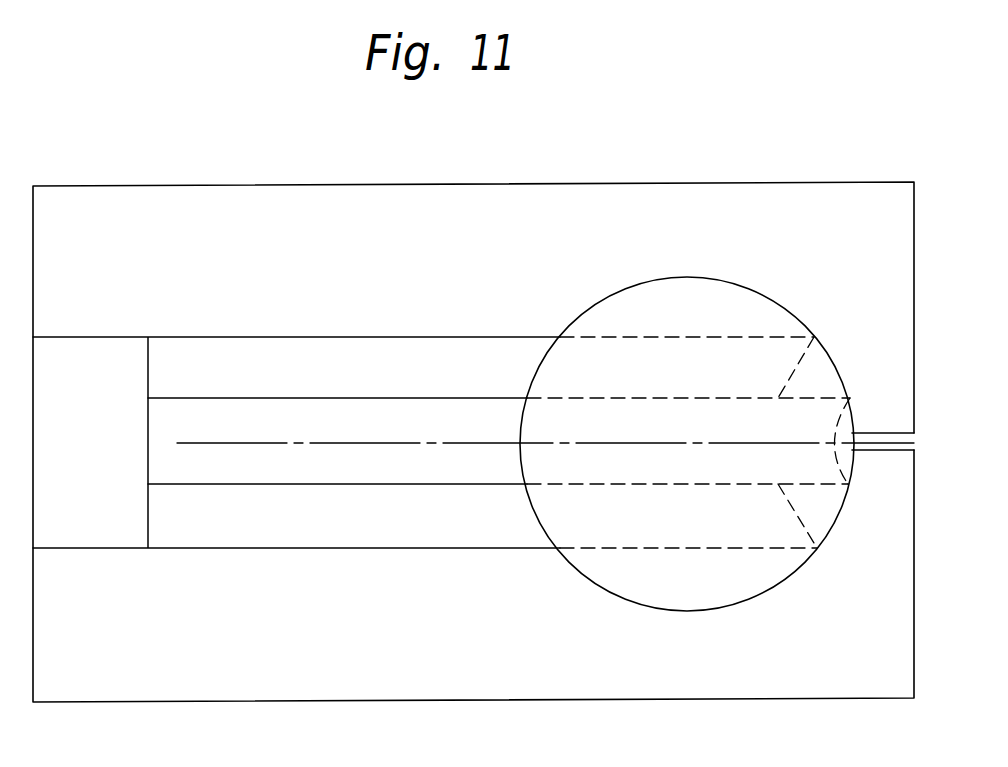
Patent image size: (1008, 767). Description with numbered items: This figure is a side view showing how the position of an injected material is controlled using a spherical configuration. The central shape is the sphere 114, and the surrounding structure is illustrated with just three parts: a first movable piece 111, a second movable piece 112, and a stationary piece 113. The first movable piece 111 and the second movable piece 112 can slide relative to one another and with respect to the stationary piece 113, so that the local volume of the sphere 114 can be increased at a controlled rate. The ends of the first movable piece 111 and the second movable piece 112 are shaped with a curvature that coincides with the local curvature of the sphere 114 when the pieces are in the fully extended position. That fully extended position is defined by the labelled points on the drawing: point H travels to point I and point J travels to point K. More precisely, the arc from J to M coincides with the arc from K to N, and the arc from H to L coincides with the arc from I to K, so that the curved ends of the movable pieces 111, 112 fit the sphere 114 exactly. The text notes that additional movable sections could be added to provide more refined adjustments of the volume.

The first movable piece 111 is at (195, 427).
The second movable piece 112 is at (352, 363).
The stationary piece 113 is at (443, 217).
The sphere 114 is at (690, 297).
The point H is at (814, 337).
The point I is at (560, 337).
The point J is at (853, 398).
The point K is at (527, 398).
The point L is at (780, 397).
The point M is at (848, 484).
The point N is at (526, 485).